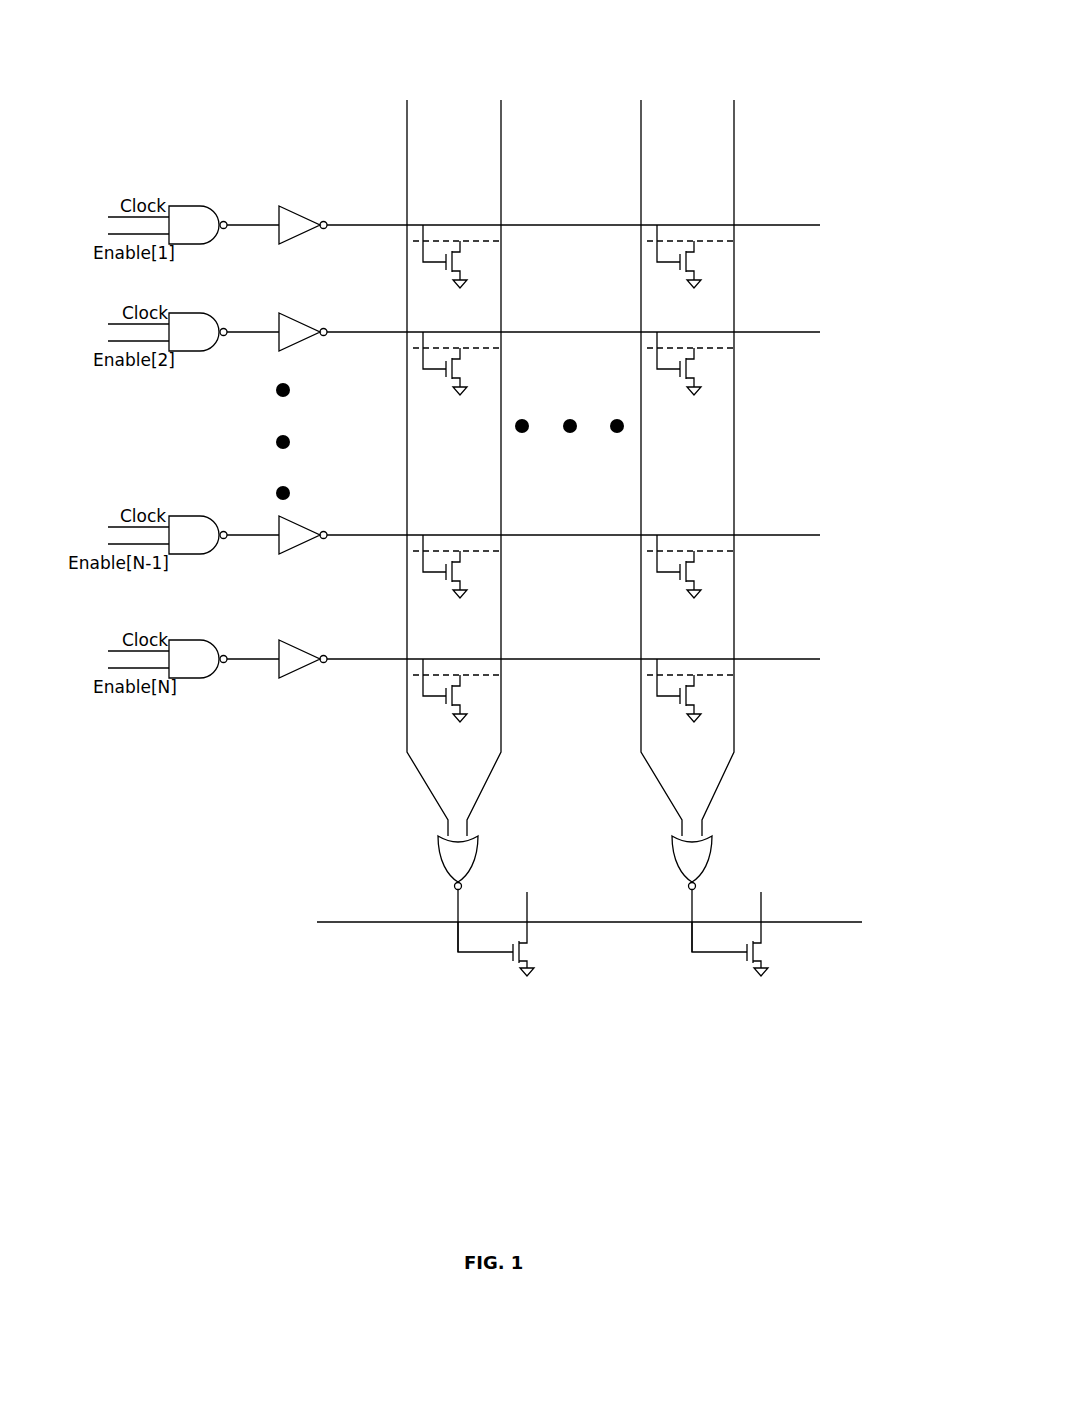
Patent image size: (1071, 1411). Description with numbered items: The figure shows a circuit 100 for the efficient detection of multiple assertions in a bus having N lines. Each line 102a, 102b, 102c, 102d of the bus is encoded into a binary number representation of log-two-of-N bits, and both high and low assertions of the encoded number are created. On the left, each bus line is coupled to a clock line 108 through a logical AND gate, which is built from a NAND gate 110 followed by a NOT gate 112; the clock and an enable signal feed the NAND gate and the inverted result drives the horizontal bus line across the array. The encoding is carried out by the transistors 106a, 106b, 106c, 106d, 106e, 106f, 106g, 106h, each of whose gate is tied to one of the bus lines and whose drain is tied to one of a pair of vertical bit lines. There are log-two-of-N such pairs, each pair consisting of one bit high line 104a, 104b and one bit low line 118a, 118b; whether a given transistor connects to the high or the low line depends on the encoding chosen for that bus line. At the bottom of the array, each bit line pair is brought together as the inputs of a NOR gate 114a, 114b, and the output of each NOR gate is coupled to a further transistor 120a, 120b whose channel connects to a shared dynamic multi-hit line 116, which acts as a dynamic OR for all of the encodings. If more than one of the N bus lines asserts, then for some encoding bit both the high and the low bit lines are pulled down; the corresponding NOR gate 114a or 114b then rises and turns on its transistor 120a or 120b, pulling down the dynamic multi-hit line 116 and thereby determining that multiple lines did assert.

The circuit 100 is at (764, 43).
The line 102a is at (611, 211).
The line 102b is at (611, 318).
The line 102c is at (611, 521).
The line 102d is at (611, 645).
The bit high line 104a is at (432, 459).
The bit high line 104b is at (666, 459).
The transistor 106a is at (496, 256).
The transistor 106b is at (730, 256).
The transistor 106c is at (496, 363).
The transistor 106d is at (730, 363).
The transistor 106e is at (496, 566).
The transistor 106f is at (728, 566).
The transistor 106g is at (496, 690).
The transistor 106h is at (730, 690).
The clock line 108 is at (108, 217).
The NAND gate 110 is at (192, 206).
The NOT gate 112 is at (297, 214).
The NOR gate 114a is at (476, 856).
The NOR gate 114b is at (710, 856).
The dynamic multi-hit line 116 is at (862, 922).
The bit low line 118a is at (518, 459).
The bit low line 118b is at (752, 459).
The transistor 120a is at (545, 934).
The transistor 120b is at (779, 934).